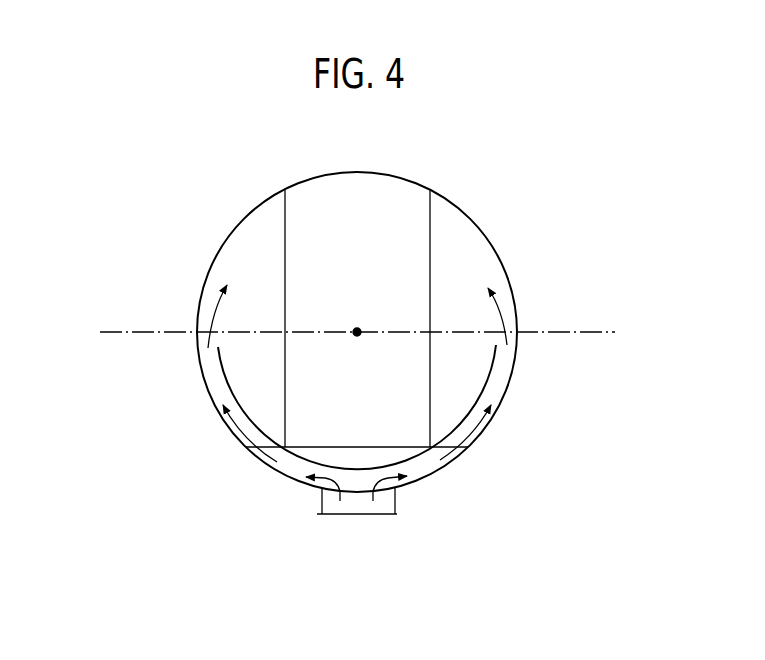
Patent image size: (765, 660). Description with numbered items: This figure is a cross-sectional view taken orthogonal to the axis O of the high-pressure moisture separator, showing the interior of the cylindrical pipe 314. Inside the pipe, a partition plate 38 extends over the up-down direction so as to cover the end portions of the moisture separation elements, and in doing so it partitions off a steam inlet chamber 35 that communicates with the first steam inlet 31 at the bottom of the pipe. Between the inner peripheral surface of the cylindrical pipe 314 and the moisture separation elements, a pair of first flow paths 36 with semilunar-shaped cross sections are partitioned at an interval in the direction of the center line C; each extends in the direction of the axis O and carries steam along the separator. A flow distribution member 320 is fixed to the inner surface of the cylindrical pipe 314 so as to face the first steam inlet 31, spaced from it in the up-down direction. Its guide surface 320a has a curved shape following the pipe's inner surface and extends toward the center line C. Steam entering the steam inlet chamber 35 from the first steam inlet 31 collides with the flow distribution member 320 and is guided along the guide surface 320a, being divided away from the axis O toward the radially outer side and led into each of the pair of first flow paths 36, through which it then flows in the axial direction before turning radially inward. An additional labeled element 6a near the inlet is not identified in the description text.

The cylindrical pipe 314 is at (494, 248).
The partition plate 38 is at (393, 188).
The first flow path 36 is at (268, 262).
The axis O is at (357, 332).
The center line C is at (600, 332).
The flow distribution member 320 is at (493, 382).
The guide surface 320a is at (227, 388).
The steam inlet chamber 35 is at (473, 341).
The No. 1 steam inlet 31 is at (350, 508).
The inlet passage 6a is at (353, 510).